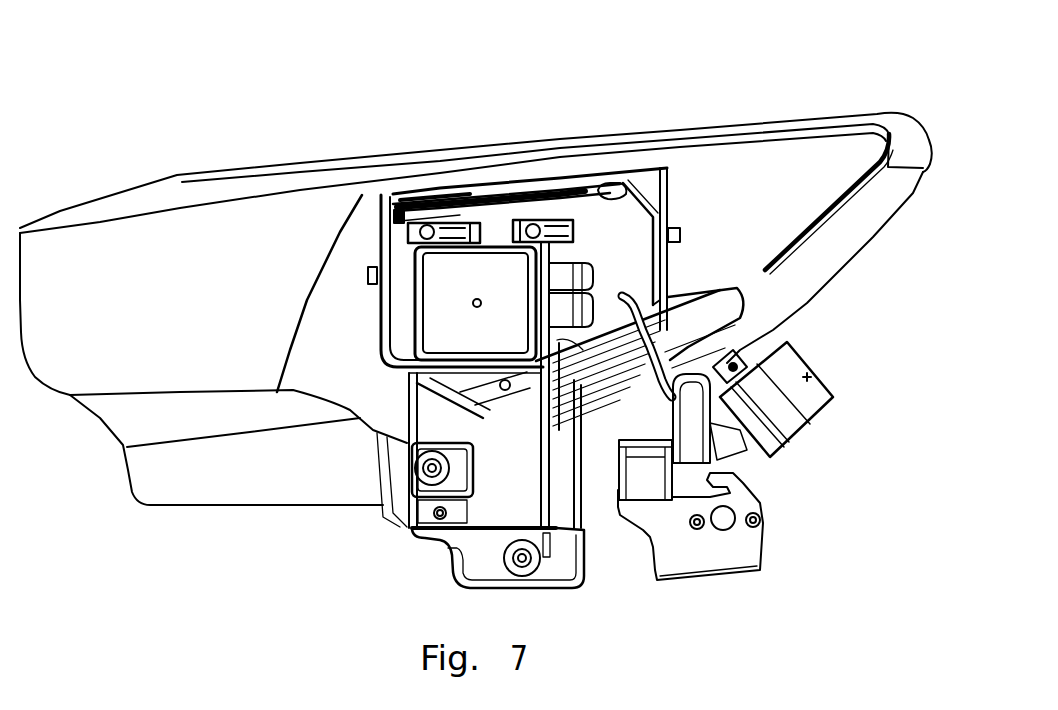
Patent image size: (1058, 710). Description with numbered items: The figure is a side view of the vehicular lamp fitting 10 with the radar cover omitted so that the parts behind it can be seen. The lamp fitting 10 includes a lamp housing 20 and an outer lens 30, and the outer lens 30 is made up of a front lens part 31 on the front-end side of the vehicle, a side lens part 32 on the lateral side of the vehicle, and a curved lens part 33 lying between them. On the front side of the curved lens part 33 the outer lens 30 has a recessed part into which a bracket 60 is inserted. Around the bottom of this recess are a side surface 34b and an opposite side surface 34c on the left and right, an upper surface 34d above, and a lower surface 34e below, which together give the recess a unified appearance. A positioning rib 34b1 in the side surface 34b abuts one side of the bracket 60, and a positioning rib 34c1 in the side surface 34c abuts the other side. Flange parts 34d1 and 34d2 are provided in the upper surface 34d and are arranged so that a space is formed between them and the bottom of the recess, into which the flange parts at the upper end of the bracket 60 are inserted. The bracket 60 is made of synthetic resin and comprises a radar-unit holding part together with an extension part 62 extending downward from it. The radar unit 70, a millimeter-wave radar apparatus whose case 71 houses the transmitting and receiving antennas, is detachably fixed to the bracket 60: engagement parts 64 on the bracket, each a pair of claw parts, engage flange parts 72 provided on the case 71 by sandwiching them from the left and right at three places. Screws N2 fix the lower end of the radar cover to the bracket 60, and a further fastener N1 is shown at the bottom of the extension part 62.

The vehicular lamp fitting 10 is at (431, 71).
The lamp housing 20 is at (384, 153).
The outer lens 30 is at (214, 213).
The front lens part 31 is at (267, 213).
The side lens part 32 is at (783, 150).
The curved lens part 33 is at (510, 165).
The side surface 34b is at (327, 290).
The positioning rib 34b1 is at (368, 267).
The side surface 34c is at (687, 293).
The positioning rib 34c1 is at (681, 235).
The upper surface 34d is at (560, 165).
The flange part 34d1 is at (450, 190).
The flange part 34d2 is at (617, 182).
The lower surface 34e is at (603, 381).
The bracket 60 is at (667, 197).
The extension part 62 is at (630, 420).
The engagement part 64 is at (577, 237).
The radar unit 70 is at (490, 273).
The case 71 is at (412, 328).
The flange part 72 is at (400, 217).
The nut N1 is at (514, 576).
The screw N2 is at (430, 470).